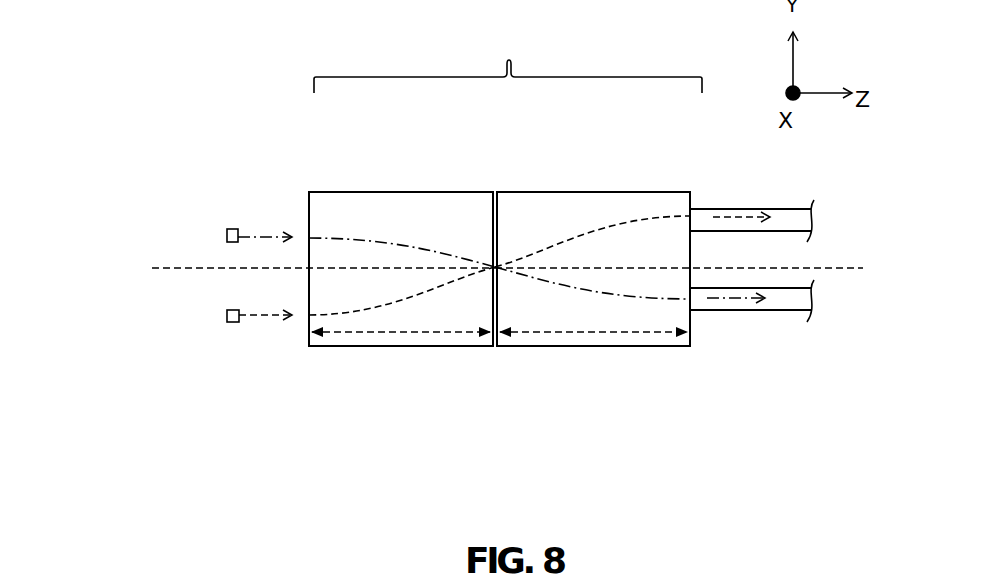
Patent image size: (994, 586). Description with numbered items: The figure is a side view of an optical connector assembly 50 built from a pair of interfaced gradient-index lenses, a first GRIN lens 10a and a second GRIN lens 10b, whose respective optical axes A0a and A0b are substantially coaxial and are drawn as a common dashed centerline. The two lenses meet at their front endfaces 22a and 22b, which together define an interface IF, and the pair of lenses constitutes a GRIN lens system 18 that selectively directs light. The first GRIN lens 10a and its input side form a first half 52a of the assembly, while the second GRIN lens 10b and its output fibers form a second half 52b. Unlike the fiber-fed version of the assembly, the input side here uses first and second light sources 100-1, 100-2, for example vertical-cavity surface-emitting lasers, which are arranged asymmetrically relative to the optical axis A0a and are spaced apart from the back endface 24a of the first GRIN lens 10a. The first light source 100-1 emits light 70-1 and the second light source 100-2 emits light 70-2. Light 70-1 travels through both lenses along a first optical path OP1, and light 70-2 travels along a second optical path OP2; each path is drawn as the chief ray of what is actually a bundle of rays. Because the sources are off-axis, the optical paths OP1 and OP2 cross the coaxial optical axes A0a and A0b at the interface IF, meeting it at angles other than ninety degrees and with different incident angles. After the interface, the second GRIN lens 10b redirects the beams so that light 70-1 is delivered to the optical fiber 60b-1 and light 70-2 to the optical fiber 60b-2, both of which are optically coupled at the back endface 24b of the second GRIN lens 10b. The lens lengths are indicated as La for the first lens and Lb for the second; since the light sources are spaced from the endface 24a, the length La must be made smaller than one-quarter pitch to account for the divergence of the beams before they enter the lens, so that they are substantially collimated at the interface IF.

The GRIN lens system 18 is at (508, 54).
The optical connector assembly 50 is at (352, 56).
The first half of optical connector assembly 52a is at (212, 101).
The second half of optical connector assembly 52b is at (694, 417).
The first GRIN lens 10a is at (396, 178).
The second GRIN lens 10b is at (590, 178).
The front endface of first GRIN lens 22a is at (505, 346).
The front endface of second GRIN lens 22b is at (492, 206).
The interface IF is at (499, 318).
The back endface of first GRIN lens 24a is at (306, 283).
The back endface of second GRIN lens 24b is at (690, 252).
The optical axis of first GRIN lens A0a is at (160, 268).
The optical axis of second GRIN lens A0b is at (832, 267).
The first optical path OP1 is at (402, 231).
The second optical path OP2 is at (406, 318).
The first light 70-1 is at (258, 236).
The second light 70-2 is at (728, 207).
The first light source 100-1 is at (226, 235).
The second light source 100-2 is at (226, 316).
The second optical fiber of second bundle 60b-2 is at (797, 207).
The first optical fiber of second bundle 60b-1 is at (790, 312).
The length of first GRIN lens La is at (342, 334).
The length of second GRIN lens Lb is at (607, 335).